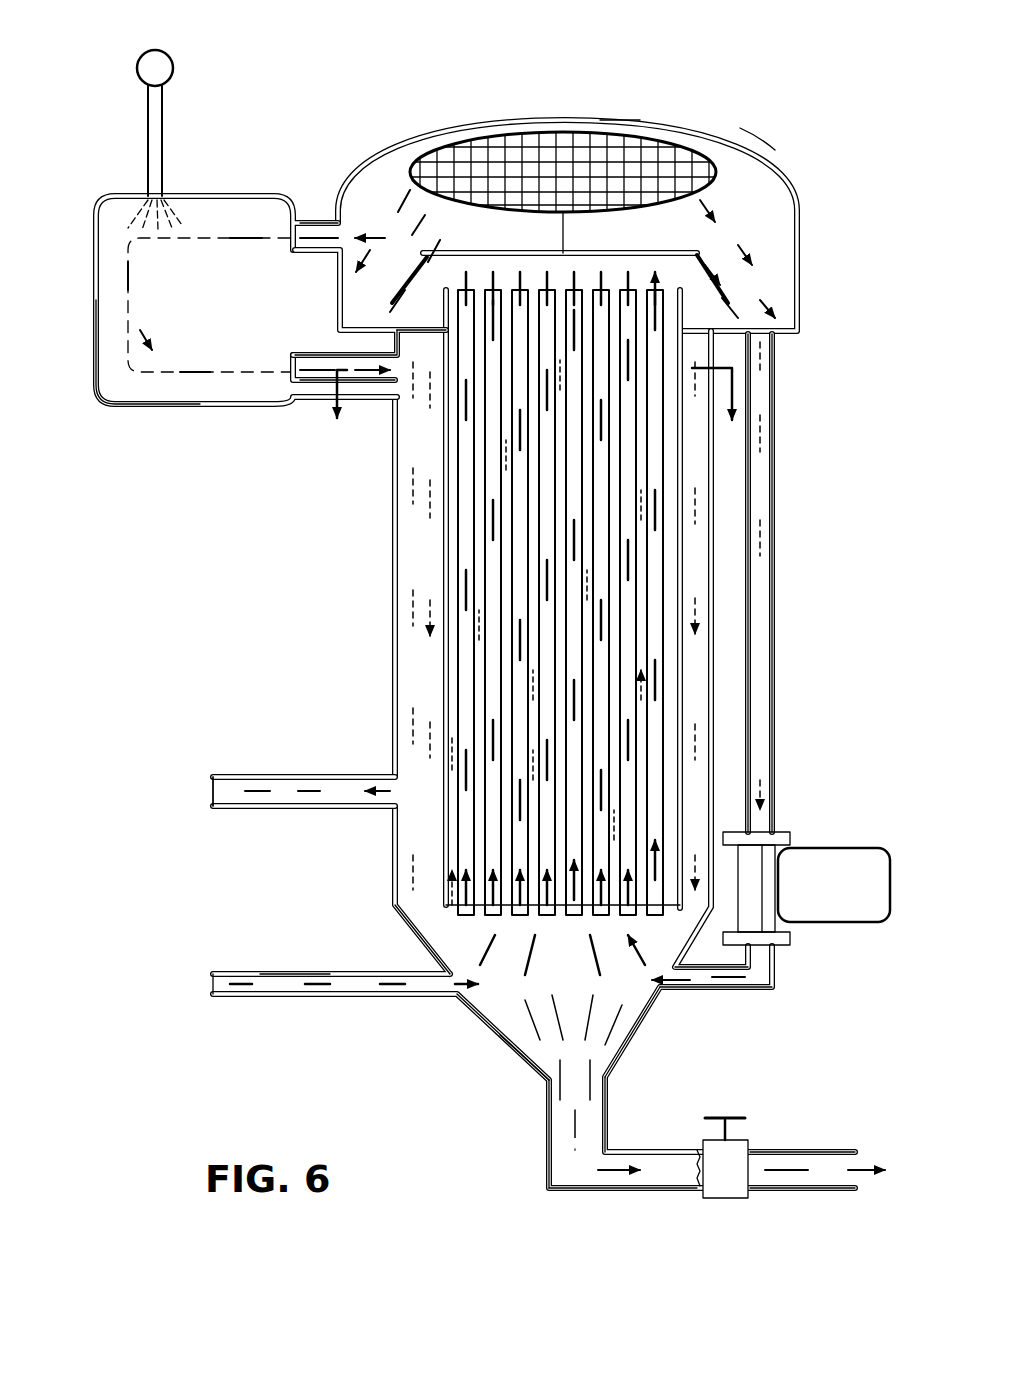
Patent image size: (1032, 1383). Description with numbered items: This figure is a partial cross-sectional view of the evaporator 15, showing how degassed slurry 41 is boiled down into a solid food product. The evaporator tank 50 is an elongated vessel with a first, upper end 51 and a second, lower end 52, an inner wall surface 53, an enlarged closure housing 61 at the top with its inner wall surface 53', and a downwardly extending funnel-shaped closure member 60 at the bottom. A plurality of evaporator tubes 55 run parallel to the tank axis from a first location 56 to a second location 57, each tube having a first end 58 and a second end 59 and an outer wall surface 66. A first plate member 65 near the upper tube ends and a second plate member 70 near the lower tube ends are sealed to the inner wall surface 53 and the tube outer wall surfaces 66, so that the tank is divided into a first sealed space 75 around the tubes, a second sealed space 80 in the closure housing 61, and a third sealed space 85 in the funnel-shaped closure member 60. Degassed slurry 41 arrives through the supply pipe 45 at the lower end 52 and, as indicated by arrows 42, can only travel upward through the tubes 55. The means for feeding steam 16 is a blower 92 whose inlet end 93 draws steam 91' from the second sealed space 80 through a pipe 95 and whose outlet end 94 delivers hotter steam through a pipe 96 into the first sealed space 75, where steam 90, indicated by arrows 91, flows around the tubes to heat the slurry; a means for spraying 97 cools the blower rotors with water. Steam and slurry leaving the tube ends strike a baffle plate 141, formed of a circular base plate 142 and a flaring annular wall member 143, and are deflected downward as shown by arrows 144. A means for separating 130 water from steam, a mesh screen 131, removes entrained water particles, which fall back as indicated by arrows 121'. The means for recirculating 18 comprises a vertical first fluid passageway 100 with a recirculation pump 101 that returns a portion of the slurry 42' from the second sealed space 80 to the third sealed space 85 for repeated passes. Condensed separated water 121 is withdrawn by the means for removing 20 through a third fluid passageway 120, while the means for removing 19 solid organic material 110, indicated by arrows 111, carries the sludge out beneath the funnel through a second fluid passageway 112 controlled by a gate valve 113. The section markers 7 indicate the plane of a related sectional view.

The section line 7 is at (535, 408).
The evaporator 15 is at (340, 662).
The means for feeding steam 16 is at (219, 263).
The means for recirculating 18 is at (790, 526).
The means for removing solid organic material 19 is at (720, 1200).
The means for removing separated water 20 is at (285, 770).
The degassed slurry 41 is at (345, 985).
The arrows indicating degassed slurry flow 42 is at (515, 643).
The recirculated degassed slurry 42' is at (766, 683).
The degassed slurry supply pipe 45 is at (290, 1000).
The evaporator tank 50 is at (398, 445).
The first end of evaporator tank 51 is at (820, 212).
The second end of evaporator tank 52 is at (380, 902).
The inner wall surface 53 is at (534, 792).
The inner wall surface of closure housing 53' is at (422, 179).
The evaporator tubes 55 is at (648, 598).
The first location 56 is at (745, 262).
The second location 57 is at (685, 893).
The first end of tube 58 is at (725, 275).
The second end of tube 59 is at (740, 952).
The funnel-shaped closure member 60 is at (660, 1005).
The closure housing 61 is at (690, 120).
The first plate member 65 is at (427, 330).
The outer wall surfaces of tubes 66 is at (425, 628).
The second plate member 70 is at (415, 903).
The first sealed space 75 is at (650, 488).
The second sealed space 80 is at (762, 130).
The third sealed space 85 is at (510, 1040).
The steam 90 is at (207, 400).
The arrows indicating steam flow 91 is at (209, 364).
The steam released from degassed slurry 91' is at (373, 222).
The blower 92 is at (112, 402).
The inlet end of blower 93 is at (300, 196).
The outlet end of blower 94 is at (305, 398).
The pipe 95 is at (318, 262).
The pipe 96 is at (318, 345).
The means for spraying 97 is at (172, 52).
The first fluid passageway 100 is at (775, 445).
The recirculation pump 101 is at (850, 848).
The solid organic material 110 is at (560, 1118).
The arrows indicating solid organic material flow 111 is at (605, 1092).
The second fluid passageway 112 is at (600, 1193).
The gate valve 113 is at (735, 1133).
The third fluid passageway 120 is at (237, 812).
The separated water 121 is at (517, 760).
The arrows indicating removed water particles 121' is at (777, 158).
The means for separating water from steam 130 is at (632, 135).
The mesh screen 131 is at (575, 148).
The baffle plate 141 is at (618, 246).
The base plate 142 is at (558, 195).
The annular wall member 143 is at (705, 303).
The arrows indicating deflected flow 144 is at (730, 290).